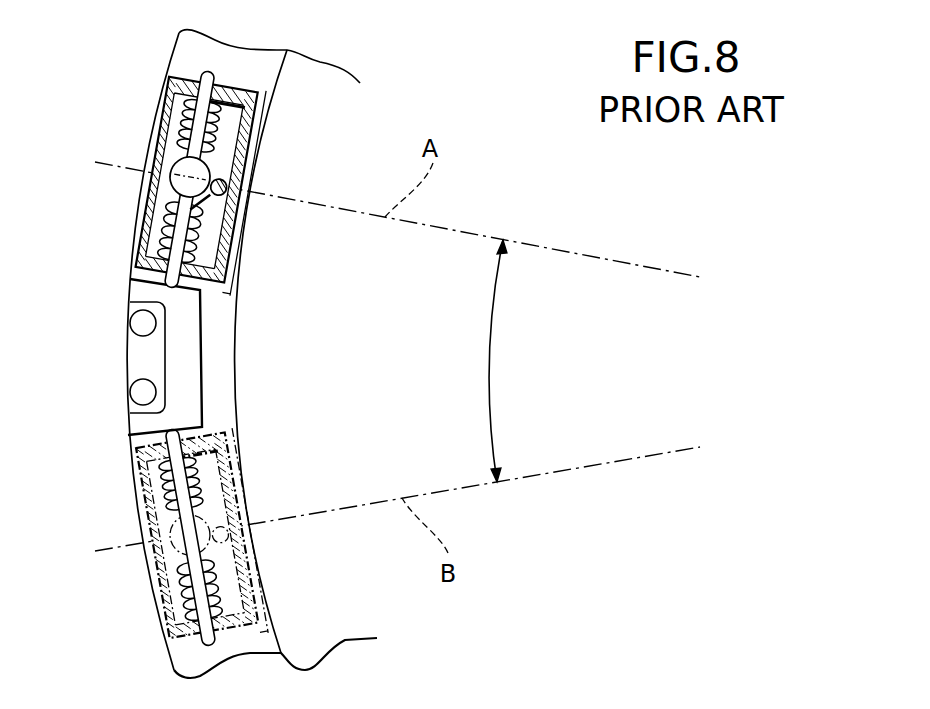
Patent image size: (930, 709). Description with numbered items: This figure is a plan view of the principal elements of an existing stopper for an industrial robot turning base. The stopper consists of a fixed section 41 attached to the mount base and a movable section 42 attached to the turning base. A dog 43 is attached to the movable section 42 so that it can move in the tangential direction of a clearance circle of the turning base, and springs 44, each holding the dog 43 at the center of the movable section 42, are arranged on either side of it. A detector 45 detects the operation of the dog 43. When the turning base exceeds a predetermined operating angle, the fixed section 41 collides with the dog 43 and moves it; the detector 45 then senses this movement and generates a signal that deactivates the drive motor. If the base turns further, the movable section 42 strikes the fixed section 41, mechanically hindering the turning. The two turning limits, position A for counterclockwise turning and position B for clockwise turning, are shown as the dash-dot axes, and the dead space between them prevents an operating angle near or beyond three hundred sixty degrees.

The fixed section 41 is at (130, 295).
The movable section 42 is at (247, 153).
The dog 43 is at (170, 177).
The springs 44 is at (193, 117).
The detector 45 is at (223, 193).